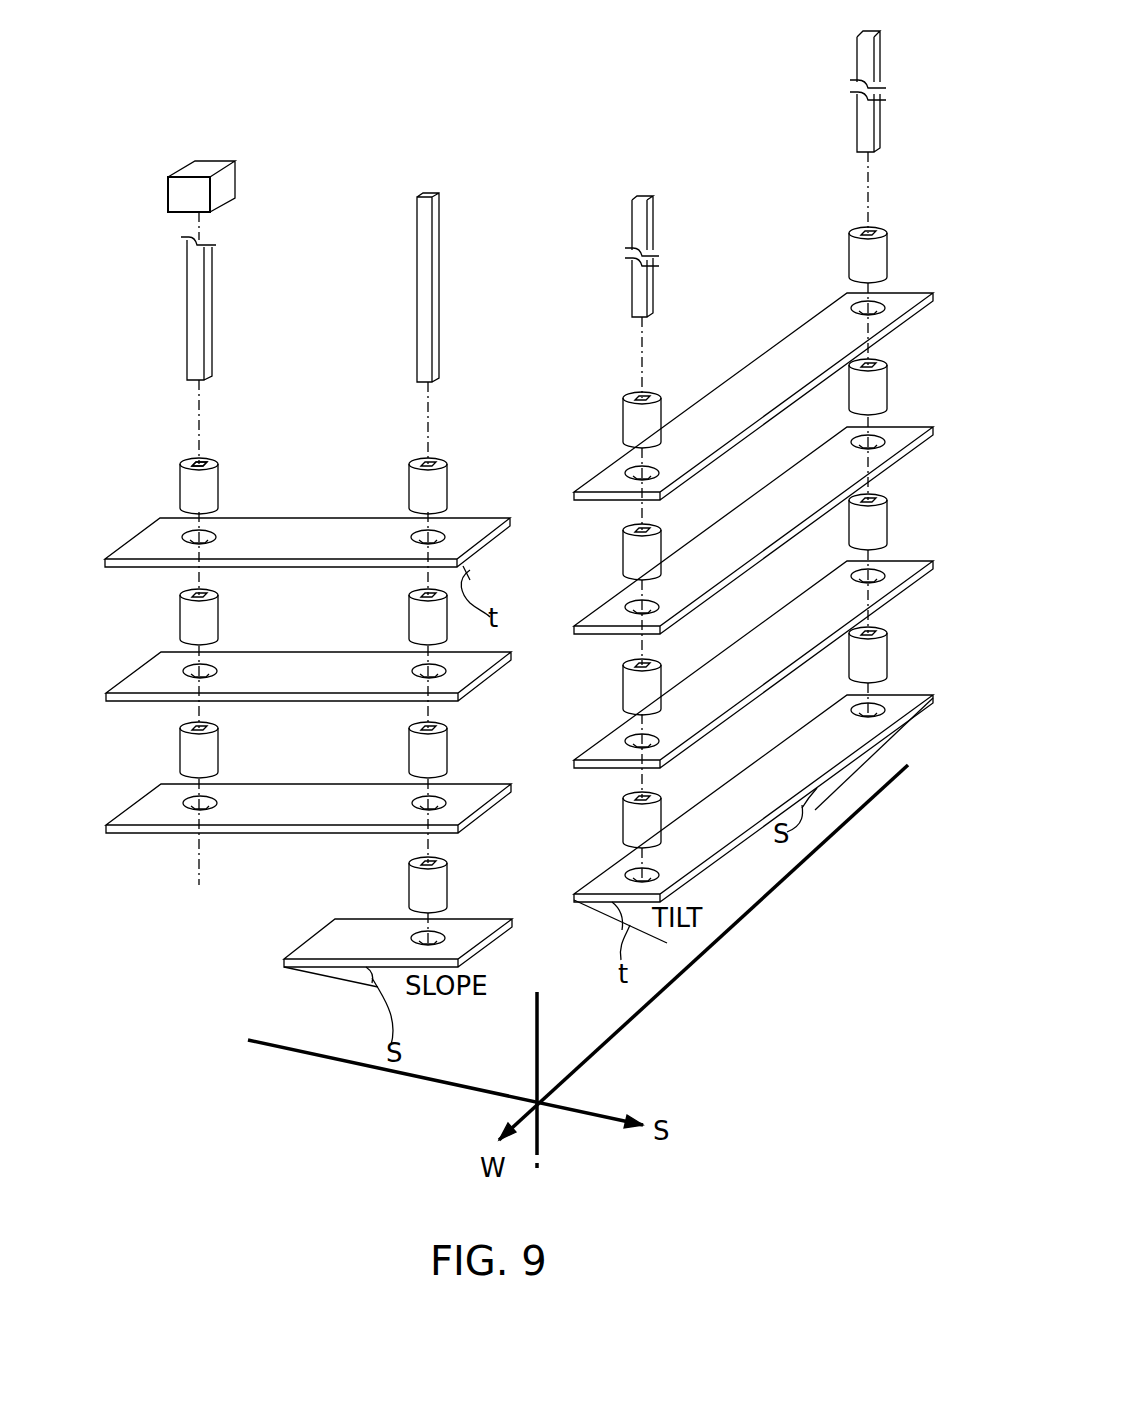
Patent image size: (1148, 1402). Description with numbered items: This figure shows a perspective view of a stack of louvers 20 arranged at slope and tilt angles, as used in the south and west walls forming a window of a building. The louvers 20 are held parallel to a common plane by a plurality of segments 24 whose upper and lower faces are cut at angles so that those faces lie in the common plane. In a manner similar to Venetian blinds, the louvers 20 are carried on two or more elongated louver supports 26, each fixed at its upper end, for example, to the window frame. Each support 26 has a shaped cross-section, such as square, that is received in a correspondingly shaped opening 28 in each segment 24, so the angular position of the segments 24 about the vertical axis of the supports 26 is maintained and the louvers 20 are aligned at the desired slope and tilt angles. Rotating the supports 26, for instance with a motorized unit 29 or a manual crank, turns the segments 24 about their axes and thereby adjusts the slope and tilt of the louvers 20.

The louver 20 is at (900, 297).
The segment 24 is at (193, 488).
The louver support 26 is at (187, 295).
The opening 28 is at (193, 461).
The motorized unit 29 is at (182, 198).